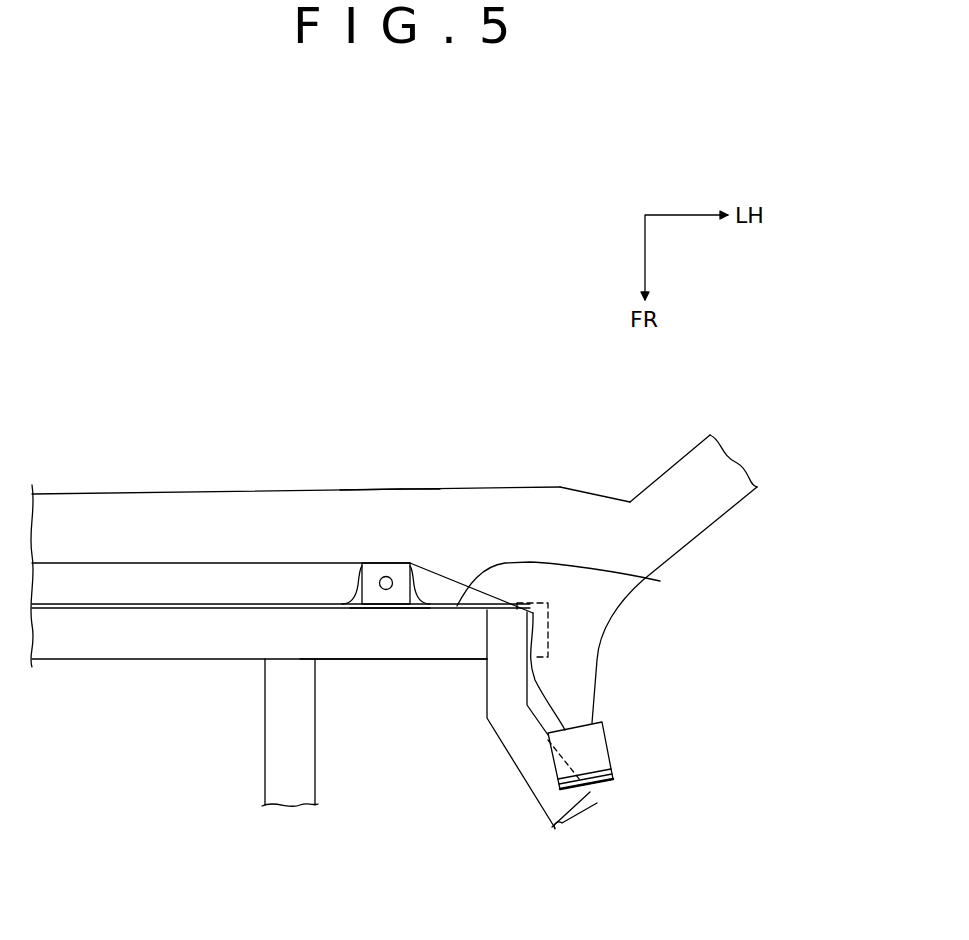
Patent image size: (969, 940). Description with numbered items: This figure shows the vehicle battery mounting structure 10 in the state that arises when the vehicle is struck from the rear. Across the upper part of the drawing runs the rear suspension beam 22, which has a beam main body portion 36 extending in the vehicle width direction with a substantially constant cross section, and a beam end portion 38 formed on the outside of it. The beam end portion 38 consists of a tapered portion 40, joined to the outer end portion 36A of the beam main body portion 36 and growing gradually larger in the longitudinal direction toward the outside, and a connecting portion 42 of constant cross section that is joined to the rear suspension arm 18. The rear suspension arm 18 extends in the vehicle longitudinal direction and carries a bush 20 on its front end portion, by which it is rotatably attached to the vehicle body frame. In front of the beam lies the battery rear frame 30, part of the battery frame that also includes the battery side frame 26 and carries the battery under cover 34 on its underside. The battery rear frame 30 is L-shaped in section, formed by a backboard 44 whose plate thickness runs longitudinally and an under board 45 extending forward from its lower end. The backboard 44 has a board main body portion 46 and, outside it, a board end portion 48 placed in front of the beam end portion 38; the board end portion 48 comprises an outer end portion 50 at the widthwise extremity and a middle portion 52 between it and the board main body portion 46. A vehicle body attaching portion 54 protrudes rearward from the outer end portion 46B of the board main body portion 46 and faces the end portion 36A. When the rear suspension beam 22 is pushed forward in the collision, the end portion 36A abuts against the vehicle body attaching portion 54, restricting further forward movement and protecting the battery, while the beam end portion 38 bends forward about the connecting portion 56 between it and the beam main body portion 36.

The vehicle battery mounting structure 10 is at (247, 290).
The rear suspension arm 18 is at (607, 608).
The bush 20 is at (614, 752).
The rear suspension beam 22 is at (394, 473).
The battery side frame 26 is at (531, 792).
The battery rear frame 30 is at (181, 661).
The battery under cover 34 is at (264, 783).
The beam main body portion 36 is at (317, 493).
The end portion of the beam main body portion 36A is at (373, 493).
The beam end portion 38 is at (473, 488).
The tapered portion 40 is at (525, 487).
The connecting portion 42 is at (605, 498).
The backboard 44 is at (125, 604).
The under board 45 is at (116, 646).
The board main body portion 46 is at (348, 660).
The end portion of the board main body portion 46B is at (384, 612).
The board end portion 48 is at (513, 729).
The outer end portion 50 is at (531, 603).
The middle portion 52 is at (660, 581).
The vehicle body attaching portion 54 is at (352, 591).
The connecting portion 56 is at (413, 493).